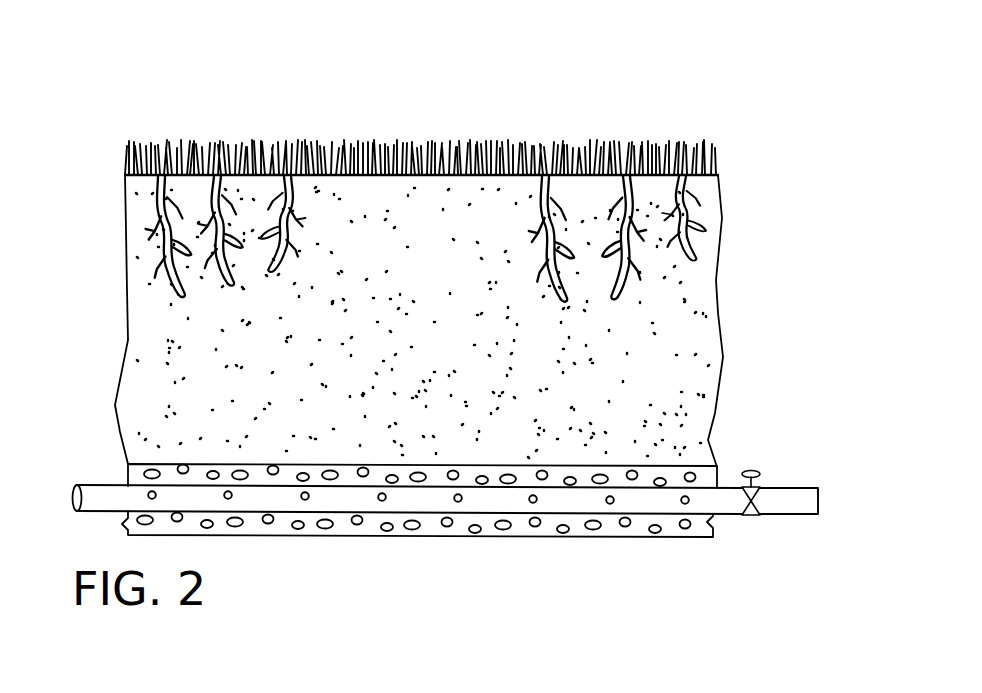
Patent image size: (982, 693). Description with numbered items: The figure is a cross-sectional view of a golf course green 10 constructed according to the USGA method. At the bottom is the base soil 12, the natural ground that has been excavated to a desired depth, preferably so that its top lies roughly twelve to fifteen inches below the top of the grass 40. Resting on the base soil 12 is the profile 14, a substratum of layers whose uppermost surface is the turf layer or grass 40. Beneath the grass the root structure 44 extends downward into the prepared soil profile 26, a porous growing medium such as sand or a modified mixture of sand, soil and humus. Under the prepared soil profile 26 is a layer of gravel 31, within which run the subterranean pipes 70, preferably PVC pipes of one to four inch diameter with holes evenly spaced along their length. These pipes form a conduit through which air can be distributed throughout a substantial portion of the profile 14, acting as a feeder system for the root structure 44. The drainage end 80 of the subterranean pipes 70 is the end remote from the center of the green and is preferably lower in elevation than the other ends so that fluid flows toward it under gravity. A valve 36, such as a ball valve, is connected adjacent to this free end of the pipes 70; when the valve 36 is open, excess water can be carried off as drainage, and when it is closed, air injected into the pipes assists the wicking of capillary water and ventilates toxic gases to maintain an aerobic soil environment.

The golf course green 10 is at (204, 121).
The base soil 12 is at (470, 582).
The profile 14 is at (112, 389).
The prepared soil profile 26 is at (683, 288).
The layer of gravel 31 is at (677, 478).
The valve 36 is at (752, 518).
The grass 40 is at (618, 142).
The root structure 44 is at (145, 226).
The subterranean pipes 70 is at (270, 497).
The drainage end 80 is at (797, 517).